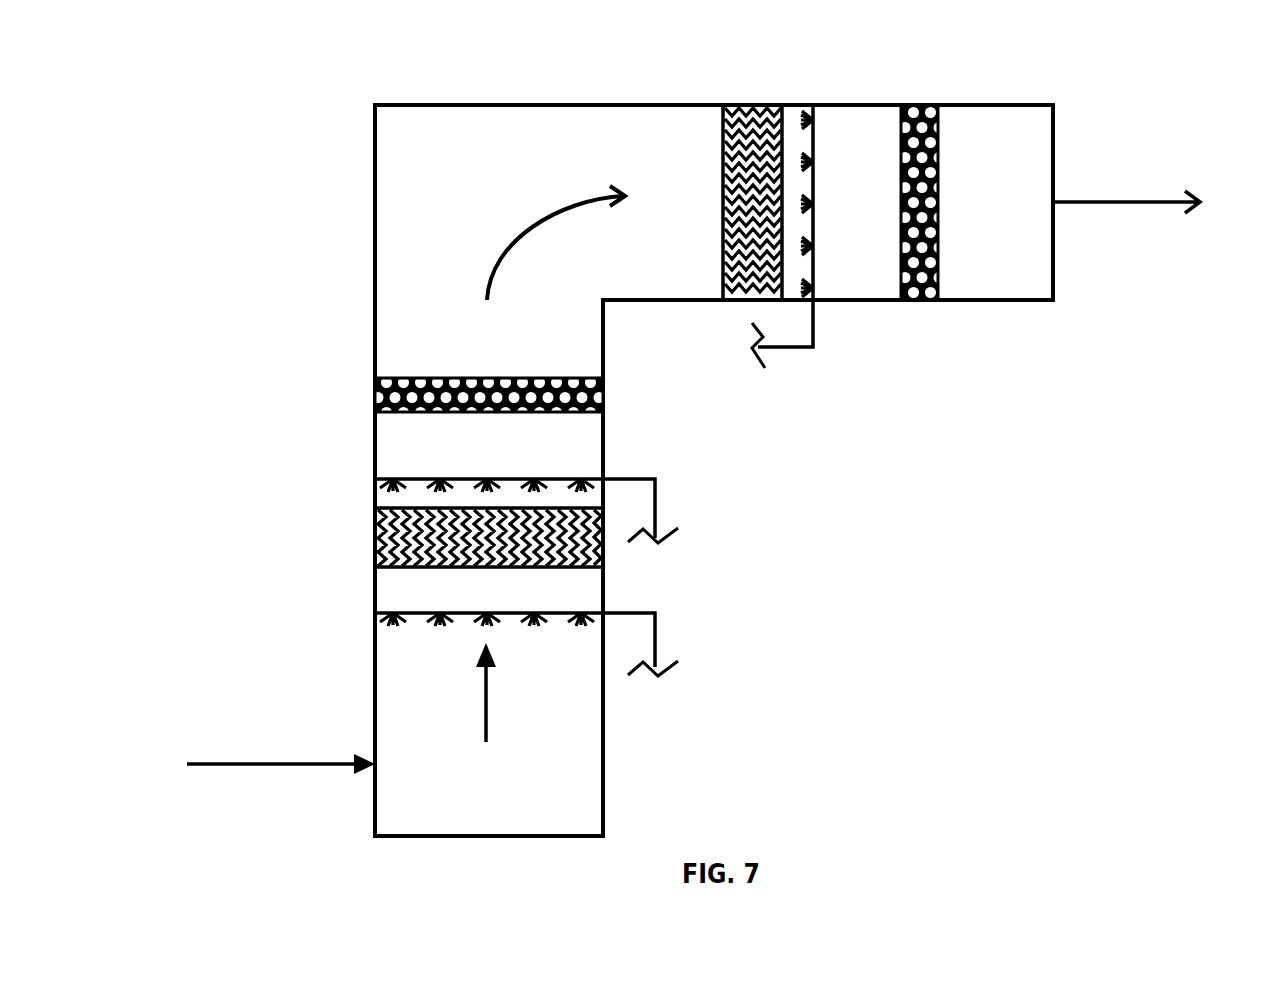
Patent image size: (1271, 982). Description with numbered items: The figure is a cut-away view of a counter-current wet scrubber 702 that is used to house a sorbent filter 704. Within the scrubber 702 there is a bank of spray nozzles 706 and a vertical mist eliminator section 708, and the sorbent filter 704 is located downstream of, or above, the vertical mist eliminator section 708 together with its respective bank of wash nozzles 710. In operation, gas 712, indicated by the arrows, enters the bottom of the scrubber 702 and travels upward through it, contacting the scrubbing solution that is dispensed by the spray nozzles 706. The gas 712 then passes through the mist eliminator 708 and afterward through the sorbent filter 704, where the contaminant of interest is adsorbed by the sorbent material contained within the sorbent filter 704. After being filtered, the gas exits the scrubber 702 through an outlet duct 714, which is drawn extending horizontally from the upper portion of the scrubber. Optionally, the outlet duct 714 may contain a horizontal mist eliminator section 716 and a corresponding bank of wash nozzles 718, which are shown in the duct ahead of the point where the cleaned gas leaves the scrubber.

The counter-current wet scrubber 702 is at (196, 490).
The sorbent filter 704 is at (375, 398).
The bank of spray nozzles 706 is at (655, 644).
The vertical mist eliminator section 708 is at (375, 540).
The bank of wash nozzles 710 is at (655, 512).
The gas 712 is at (273, 763).
The outlet duct 714 is at (1013, 104).
The horizontal mist eliminator section 716 is at (750, 110).
The bank of wash nozzles 718 is at (787, 350).